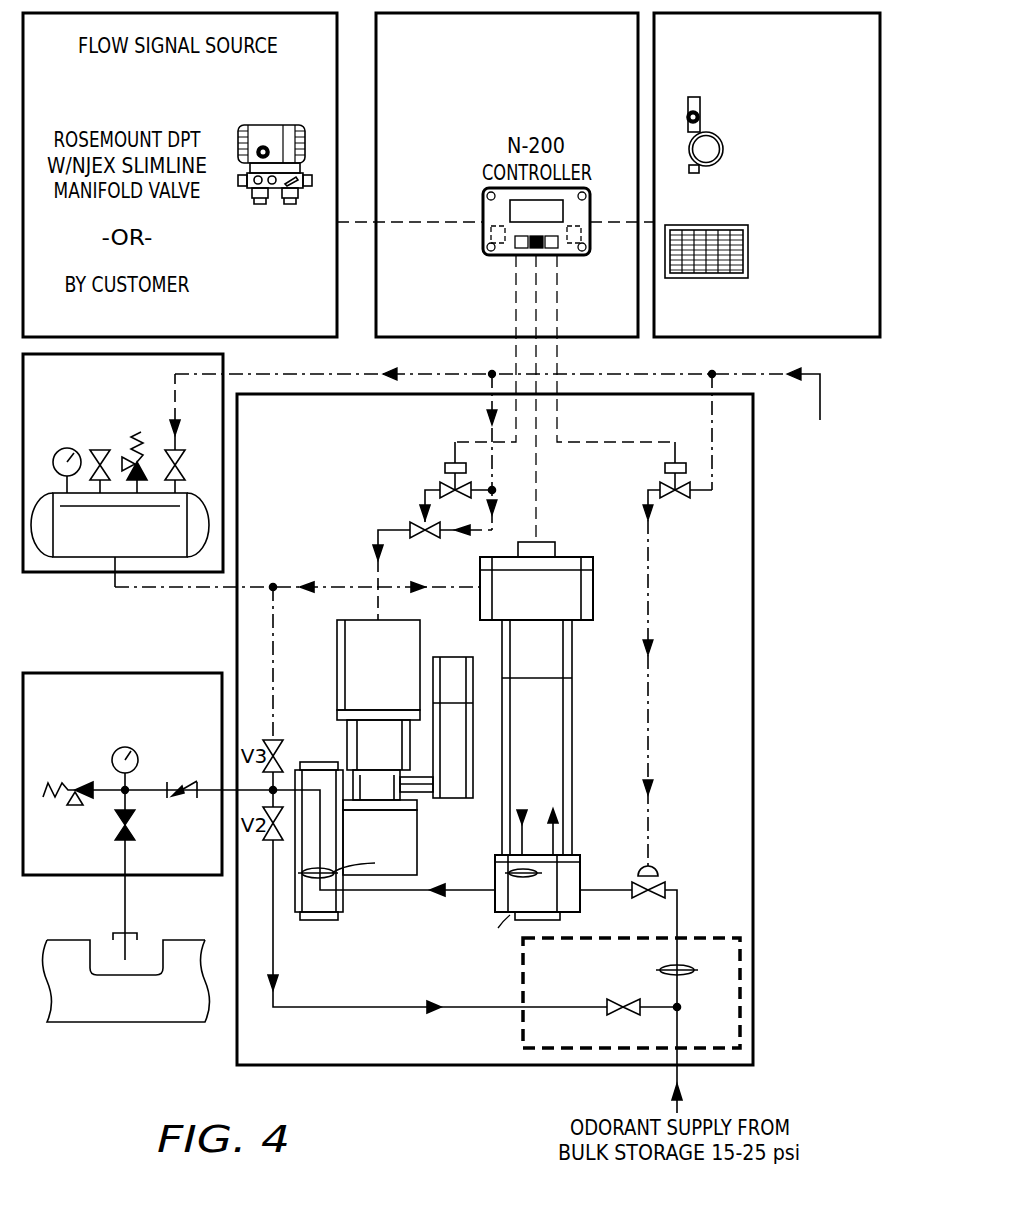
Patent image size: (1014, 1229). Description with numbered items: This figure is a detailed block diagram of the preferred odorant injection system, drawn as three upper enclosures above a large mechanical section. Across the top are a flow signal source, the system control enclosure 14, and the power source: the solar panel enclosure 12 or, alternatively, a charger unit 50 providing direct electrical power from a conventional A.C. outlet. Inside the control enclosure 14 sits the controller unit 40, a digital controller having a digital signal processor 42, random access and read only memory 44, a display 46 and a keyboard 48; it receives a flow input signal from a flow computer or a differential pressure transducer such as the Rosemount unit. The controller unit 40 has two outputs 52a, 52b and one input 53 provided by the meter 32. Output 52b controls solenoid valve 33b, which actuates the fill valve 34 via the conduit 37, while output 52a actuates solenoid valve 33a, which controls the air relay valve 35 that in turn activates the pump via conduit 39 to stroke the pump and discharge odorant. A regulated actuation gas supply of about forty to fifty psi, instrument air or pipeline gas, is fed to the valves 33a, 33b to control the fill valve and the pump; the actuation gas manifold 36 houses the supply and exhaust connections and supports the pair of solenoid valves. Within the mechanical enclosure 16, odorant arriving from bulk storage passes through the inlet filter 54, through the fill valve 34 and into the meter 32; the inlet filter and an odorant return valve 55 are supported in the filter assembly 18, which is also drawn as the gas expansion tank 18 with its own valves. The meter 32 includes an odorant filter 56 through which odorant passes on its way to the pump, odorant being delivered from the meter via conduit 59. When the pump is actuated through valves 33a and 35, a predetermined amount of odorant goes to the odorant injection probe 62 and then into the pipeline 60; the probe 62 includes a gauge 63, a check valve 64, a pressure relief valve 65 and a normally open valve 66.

The solar panel enclosure 12 is at (705, 279).
The system control enclosure 14 is at (494, 108).
The mechanical enclosure 16 is at (753, 690).
The gas expansion tank 18 is at (63, 574).
The meter 32 is at (575, 712).
The solenoid valve 33a is at (440, 457).
The solenoid valve 33b is at (675, 498).
The fill valve 34 is at (640, 857).
The air relay valve 35 is at (414, 517).
The actuation gas manifold 36 is at (331, 749).
The conduit 37 is at (653, 683).
The conduit 39 is at (376, 566).
The controller unit 40 is at (483, 200).
The digital signal processor 42 is at (483, 240).
The random access and read only memory 44 is at (590, 240).
The display 46 is at (590, 212).
The keyboard 48 is at (562, 250).
The charger unit 50 is at (700, 128).
The output 52a is at (516, 290).
The output 52b is at (557, 290).
The input 53 is at (530, 258).
The inlet filter 54 is at (686, 975).
The odorant return valve 55 is at (607, 1013).
The odorant filter 56 is at (510, 872).
The conduit 59 is at (377, 893).
The pipeline 60 is at (103, 950).
The odorant injection probe 62 is at (124, 672).
The gauge 63 is at (138, 760).
The check valve 64 is at (186, 798).
The pressure relief valve 65 is at (82, 785).
The normally open valve 66 is at (115, 828).